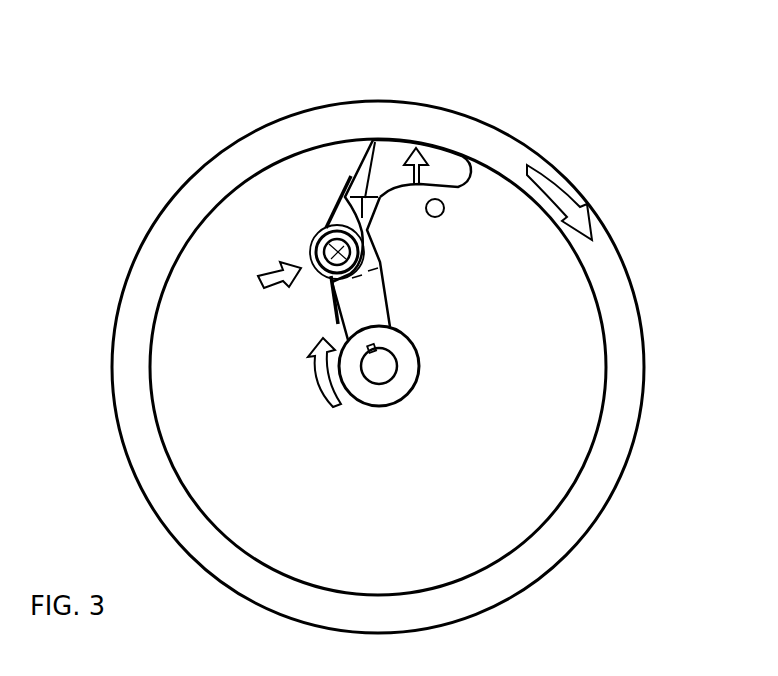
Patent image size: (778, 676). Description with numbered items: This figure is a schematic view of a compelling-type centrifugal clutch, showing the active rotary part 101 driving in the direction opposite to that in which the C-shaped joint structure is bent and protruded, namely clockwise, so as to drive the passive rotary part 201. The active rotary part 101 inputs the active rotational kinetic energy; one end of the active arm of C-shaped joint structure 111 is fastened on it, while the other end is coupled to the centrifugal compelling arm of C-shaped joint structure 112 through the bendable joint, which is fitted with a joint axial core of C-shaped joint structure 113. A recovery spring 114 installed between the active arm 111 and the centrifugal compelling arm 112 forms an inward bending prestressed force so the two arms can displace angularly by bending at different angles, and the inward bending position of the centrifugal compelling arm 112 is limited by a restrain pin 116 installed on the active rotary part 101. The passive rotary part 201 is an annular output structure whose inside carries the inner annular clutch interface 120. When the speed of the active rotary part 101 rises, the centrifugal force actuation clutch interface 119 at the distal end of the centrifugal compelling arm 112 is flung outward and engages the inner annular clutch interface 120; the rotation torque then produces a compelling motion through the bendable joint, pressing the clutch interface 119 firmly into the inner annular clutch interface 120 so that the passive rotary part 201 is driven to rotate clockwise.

The passive rotary part 201 is at (225, 173).
The active rotary part 101 is at (385, 367).
The active arm of C-shaped joint structure 111 is at (372, 317).
The centrifugal compelling arm of C-shaped joint structure 112 is at (360, 167).
The joint axial core of C-shaped joint structure 113 is at (330, 250).
The recovery spring 114 is at (333, 299).
The restrain pin 116 is at (434, 209).
The centrifugal force actuation clutch interface 119 is at (431, 141).
The inner annular clutch interface 120 is at (590, 274).